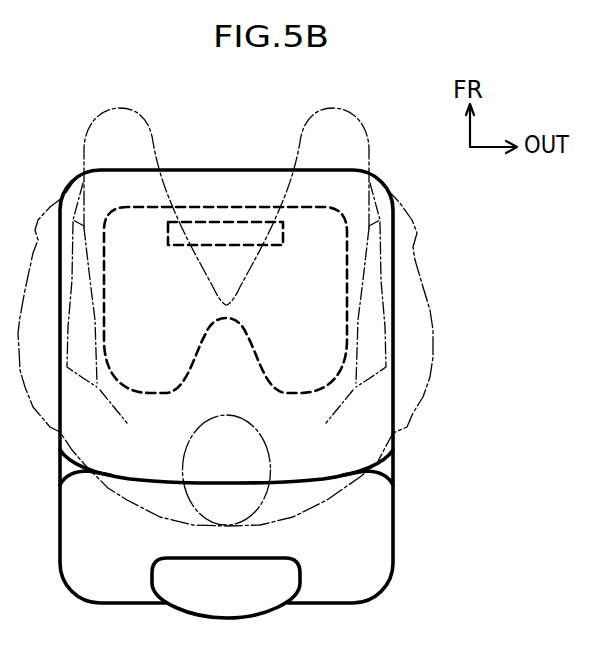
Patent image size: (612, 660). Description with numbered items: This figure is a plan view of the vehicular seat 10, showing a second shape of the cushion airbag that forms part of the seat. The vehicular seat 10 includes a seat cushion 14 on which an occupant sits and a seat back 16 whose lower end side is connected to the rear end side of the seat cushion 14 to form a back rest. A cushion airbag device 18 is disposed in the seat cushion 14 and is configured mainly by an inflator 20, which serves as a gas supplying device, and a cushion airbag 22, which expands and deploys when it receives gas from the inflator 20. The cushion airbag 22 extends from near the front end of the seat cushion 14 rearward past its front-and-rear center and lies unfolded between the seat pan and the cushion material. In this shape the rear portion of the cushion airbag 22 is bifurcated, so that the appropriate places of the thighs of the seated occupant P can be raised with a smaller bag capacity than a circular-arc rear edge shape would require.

The vehicular seat 10 is at (457, 216).
The seat cushion 14 is at (376, 415).
The seat back 16 is at (361, 528).
The cushion airbag device 18 is at (222, 192).
The inflator 20 is at (243, 230).
The cushion airbag 22 is at (190, 208).
The seated occupant P is at (437, 317).